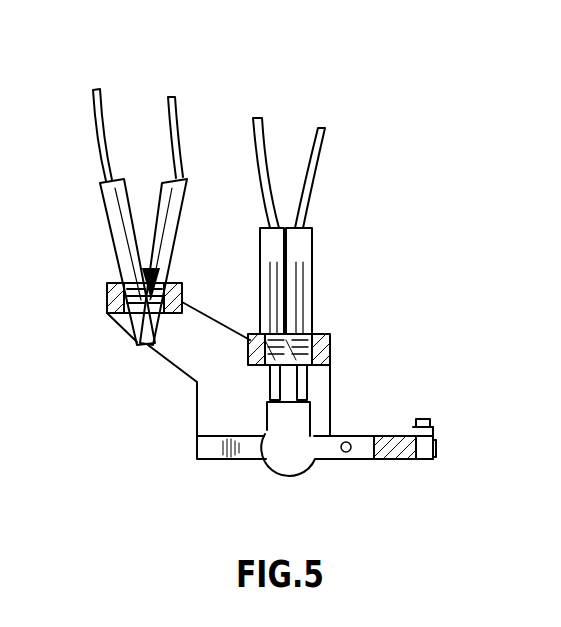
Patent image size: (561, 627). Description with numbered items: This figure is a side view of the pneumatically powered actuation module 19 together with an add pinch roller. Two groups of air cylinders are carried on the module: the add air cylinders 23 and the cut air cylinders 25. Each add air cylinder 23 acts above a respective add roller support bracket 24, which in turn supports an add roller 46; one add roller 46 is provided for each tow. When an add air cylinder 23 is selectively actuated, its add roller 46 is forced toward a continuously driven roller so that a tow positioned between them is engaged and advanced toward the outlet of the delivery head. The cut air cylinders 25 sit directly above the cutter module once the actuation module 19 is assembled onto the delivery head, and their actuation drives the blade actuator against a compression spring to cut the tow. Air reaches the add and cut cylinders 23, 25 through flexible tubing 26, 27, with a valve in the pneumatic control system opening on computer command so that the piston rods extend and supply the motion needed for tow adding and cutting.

The actuation module 19 is at (358, 278).
The add air cylinder 23 is at (263, 283).
The add roller support bracket 24 is at (288, 422).
The cut air cylinder 25 is at (113, 203).
The flexible tubing 26 is at (302, 155).
The flexible tubing 27 is at (172, 120).
The add roller 46 is at (268, 473).